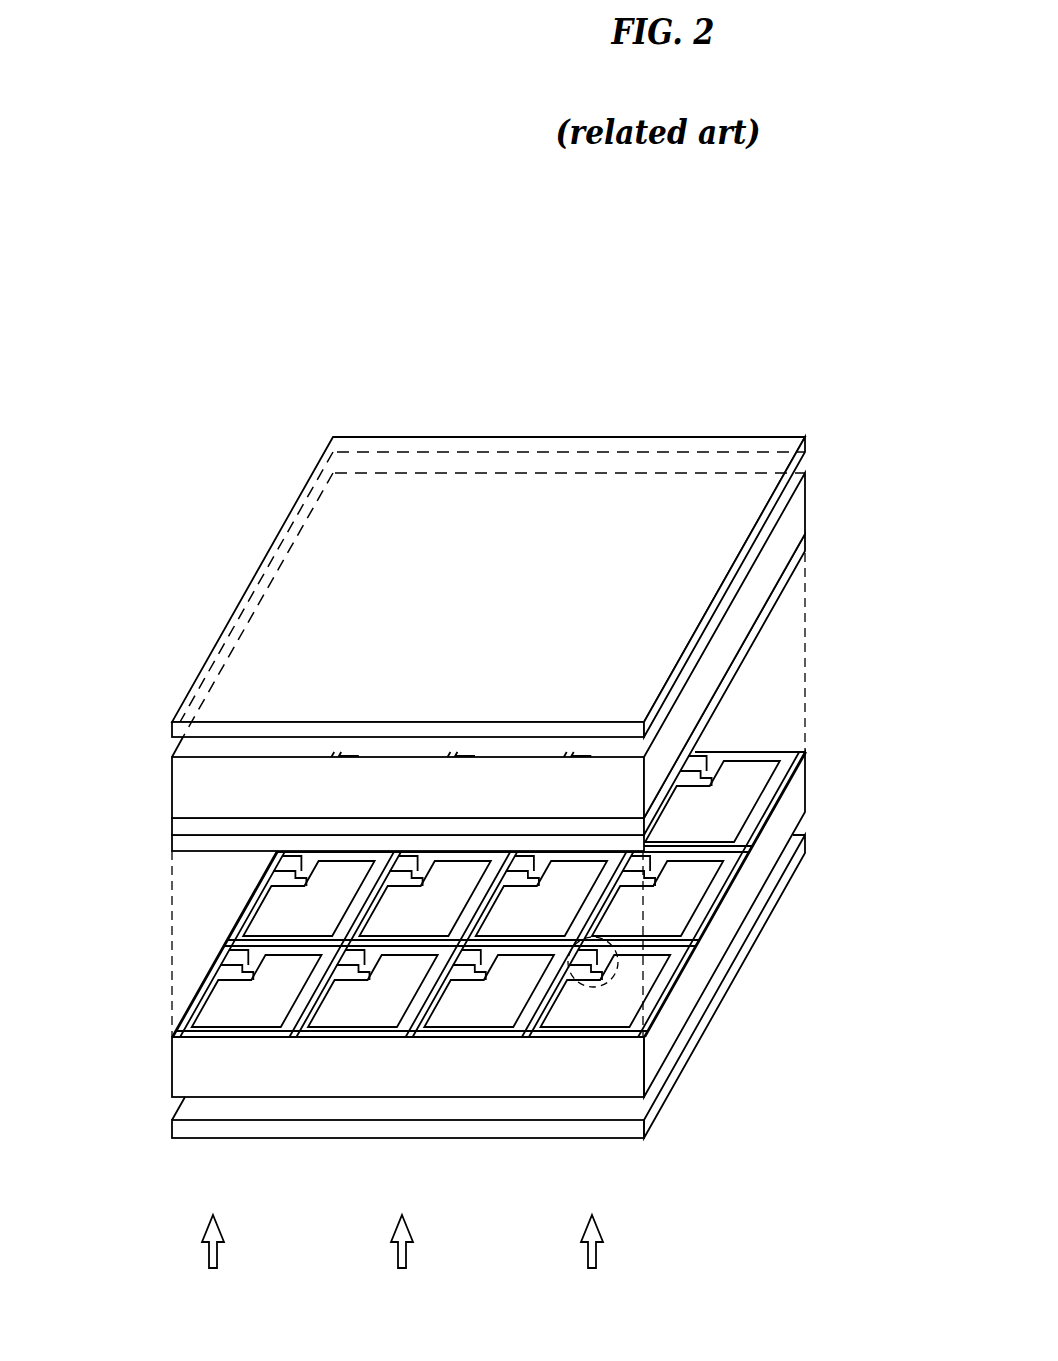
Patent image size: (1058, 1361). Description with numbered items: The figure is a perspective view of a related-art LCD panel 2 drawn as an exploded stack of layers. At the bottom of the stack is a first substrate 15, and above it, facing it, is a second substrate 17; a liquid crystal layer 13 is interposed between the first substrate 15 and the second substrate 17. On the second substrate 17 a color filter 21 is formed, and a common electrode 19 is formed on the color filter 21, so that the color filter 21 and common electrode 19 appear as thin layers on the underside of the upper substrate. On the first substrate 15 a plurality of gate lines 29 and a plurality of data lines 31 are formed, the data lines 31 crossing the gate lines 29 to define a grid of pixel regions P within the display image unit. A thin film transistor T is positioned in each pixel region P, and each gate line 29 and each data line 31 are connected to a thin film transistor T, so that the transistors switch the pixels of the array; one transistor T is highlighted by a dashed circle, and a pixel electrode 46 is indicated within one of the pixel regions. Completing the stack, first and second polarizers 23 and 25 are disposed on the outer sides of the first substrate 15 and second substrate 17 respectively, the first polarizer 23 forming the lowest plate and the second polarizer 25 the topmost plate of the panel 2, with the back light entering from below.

The LCD panel 2 is at (683, 392).
The liquid crystal layer 13 is at (168, 852).
The first substrate 15 is at (168, 1037).
The second substrate 17 is at (168, 757).
The common electrode 19 is at (806, 551).
The color filter 21 is at (805, 537).
The first polarizer 23 is at (746, 940).
The second polarizer 25 is at (775, 443).
The gate line 29 is at (512, 943).
The data line 31 is at (548, 1020).
The pixel electrode 46 is at (623, 995).
The thin film transistor T is at (580, 985).
The pixel region P is at (327, 1037).